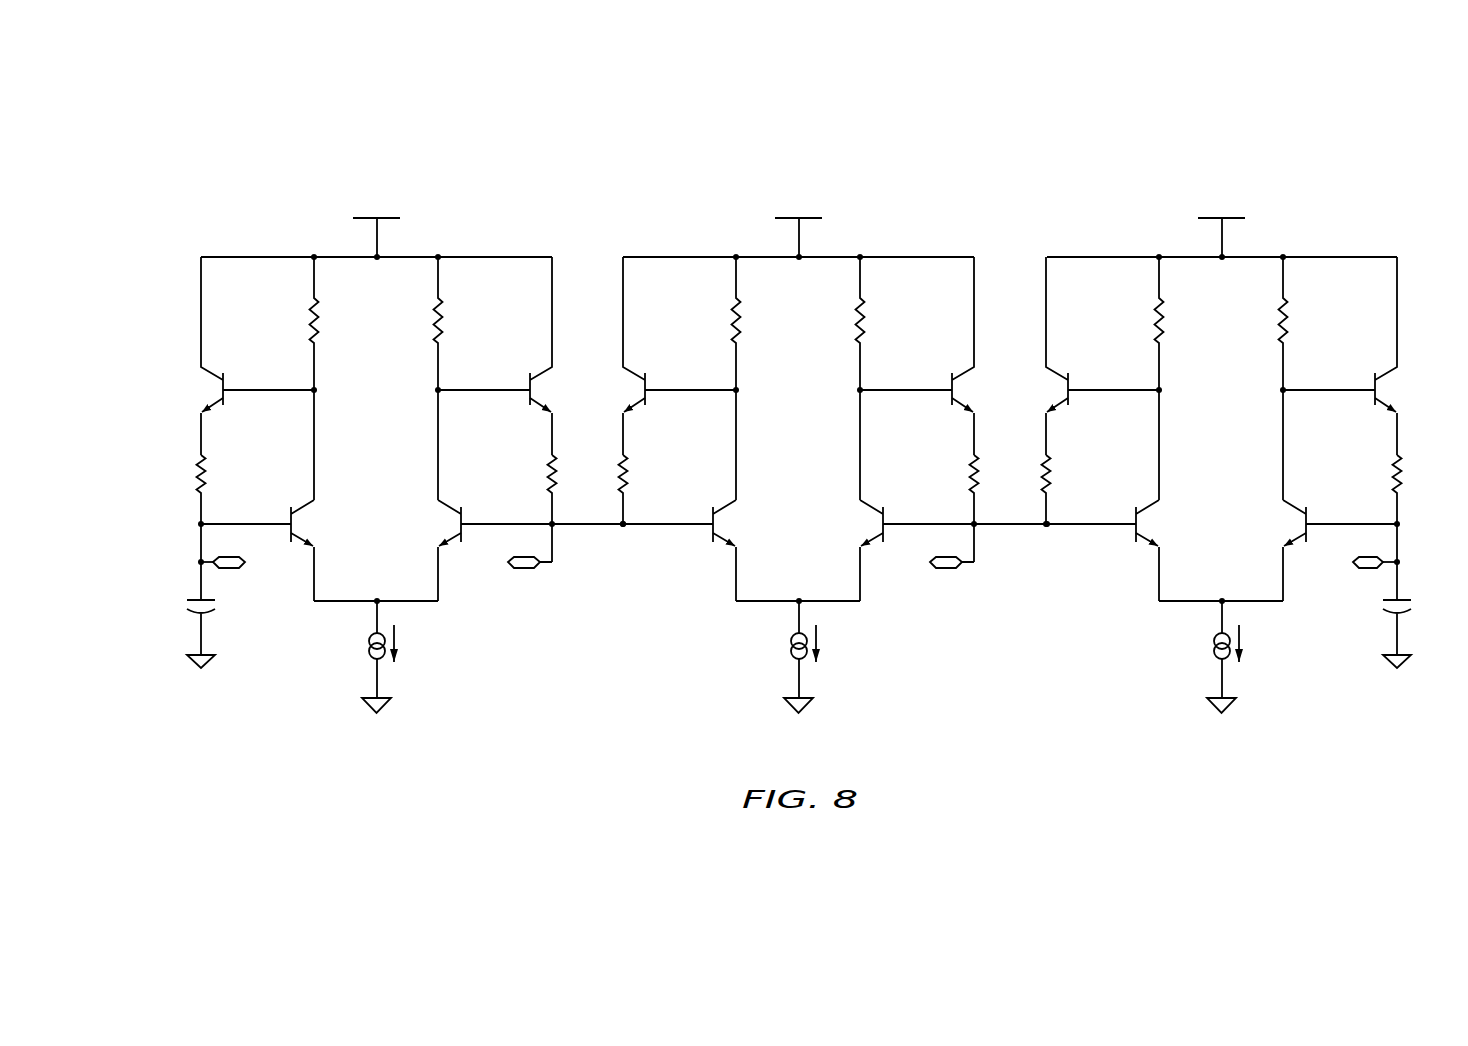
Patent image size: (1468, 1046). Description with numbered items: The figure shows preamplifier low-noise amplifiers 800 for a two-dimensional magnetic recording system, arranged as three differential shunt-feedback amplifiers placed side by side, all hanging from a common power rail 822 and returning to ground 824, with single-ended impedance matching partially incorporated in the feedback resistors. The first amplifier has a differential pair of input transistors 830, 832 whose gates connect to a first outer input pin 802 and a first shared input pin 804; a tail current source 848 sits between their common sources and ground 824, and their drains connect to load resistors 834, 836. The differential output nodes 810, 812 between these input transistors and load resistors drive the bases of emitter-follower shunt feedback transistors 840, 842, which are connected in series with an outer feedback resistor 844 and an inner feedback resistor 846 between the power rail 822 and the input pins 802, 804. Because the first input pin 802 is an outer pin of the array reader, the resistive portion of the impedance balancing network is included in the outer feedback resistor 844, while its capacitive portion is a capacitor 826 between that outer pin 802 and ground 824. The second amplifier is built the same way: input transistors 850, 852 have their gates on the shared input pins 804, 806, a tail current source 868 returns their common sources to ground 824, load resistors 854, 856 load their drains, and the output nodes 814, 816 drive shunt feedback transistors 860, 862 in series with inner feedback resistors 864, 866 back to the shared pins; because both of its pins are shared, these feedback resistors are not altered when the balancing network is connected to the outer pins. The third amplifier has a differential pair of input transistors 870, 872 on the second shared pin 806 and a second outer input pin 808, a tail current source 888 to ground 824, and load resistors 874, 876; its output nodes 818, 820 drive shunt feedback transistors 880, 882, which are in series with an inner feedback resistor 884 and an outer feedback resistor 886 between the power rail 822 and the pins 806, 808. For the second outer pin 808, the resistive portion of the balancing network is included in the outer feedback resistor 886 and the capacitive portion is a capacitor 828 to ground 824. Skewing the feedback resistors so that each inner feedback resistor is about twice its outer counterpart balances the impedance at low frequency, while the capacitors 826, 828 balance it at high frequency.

The preamplifier low-noise amplifiers 800 is at (218, 153).
The input pin HRPA 802 is at (229, 572).
The input pin HRNAB 804 is at (514, 572).
The input pin HRPBC 806 is at (968, 571).
The input pin HRNC 808 is at (1353, 578).
The differential output node 810 is at (315, 385).
The differential output node 812 is at (438, 382).
The differential output node 814 is at (761, 400).
The differential output node 816 is at (837, 370).
The differential output node 818 is at (1184, 400).
The differential output node 820 is at (1260, 370).
The power rail 822 is at (362, 217).
The ground 824 is at (372, 703).
The capacitor 826 is at (196, 597).
The capacitor 828 is at (1415, 589).
The input transistor 830 is at (289, 515).
The input transistor 832 is at (463, 515).
The load resistor 834 is at (310, 308).
The load resistor 836 is at (442, 308).
The shunt feedback transistor 840 is at (208, 369).
The shunt feedback transistor 842 is at (546, 369).
The feedback resistor RFBo 844 is at (206, 462).
The feedback resistor RFBi 846 is at (547, 462).
The tail current source 848 is at (367, 642).
The input transistor 850 is at (678, 495).
The input transistor 852 is at (918, 495).
The load resistor 854 is at (727, 323).
The load resistor 856 is at (871, 323).
The shunt feedback transistor 860 is at (679, 356).
The shunt feedback transistor 862 is at (917, 356).
The feedback resistor RFBi 864 is at (652, 474).
The feedback resistor RFBi 866 is at (945, 474).
The tail current source 868 is at (788, 648).
The transistor 870 is at (1101, 495).
The transistor 872 is at (1341, 495).
The load resistor 874 is at (1150, 323).
The load resistor 876 is at (1294, 323).
The shunt feedback transistor 880 is at (1102, 356).
The shunt feedback transistor 882 is at (1340, 356).
The feedback resistor RFBi 884 is at (1075, 474).
The feedback resistor RFBo 886 is at (1368, 474).
The tail current source 888 is at (1211, 648).